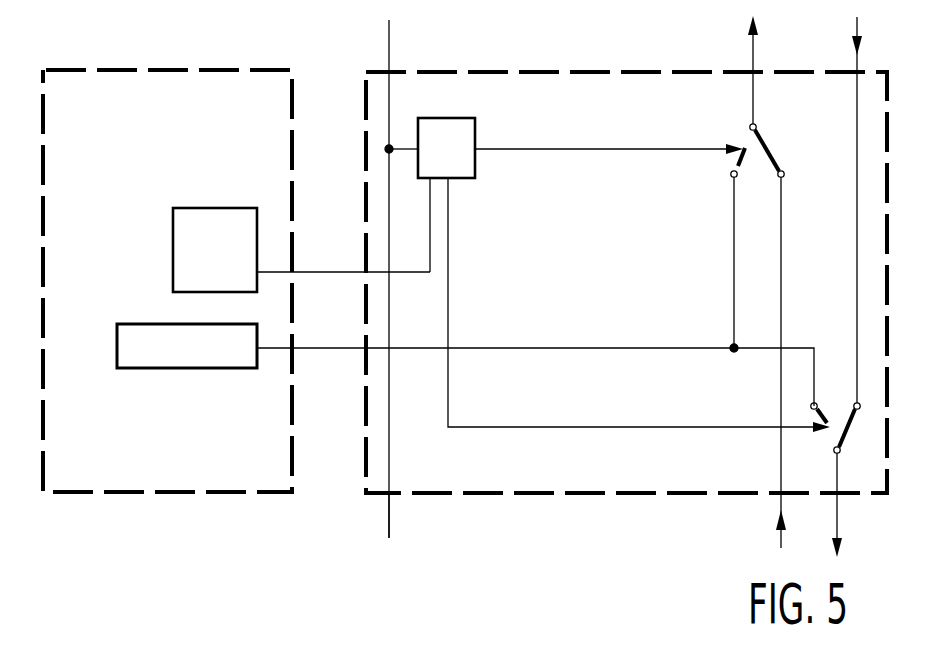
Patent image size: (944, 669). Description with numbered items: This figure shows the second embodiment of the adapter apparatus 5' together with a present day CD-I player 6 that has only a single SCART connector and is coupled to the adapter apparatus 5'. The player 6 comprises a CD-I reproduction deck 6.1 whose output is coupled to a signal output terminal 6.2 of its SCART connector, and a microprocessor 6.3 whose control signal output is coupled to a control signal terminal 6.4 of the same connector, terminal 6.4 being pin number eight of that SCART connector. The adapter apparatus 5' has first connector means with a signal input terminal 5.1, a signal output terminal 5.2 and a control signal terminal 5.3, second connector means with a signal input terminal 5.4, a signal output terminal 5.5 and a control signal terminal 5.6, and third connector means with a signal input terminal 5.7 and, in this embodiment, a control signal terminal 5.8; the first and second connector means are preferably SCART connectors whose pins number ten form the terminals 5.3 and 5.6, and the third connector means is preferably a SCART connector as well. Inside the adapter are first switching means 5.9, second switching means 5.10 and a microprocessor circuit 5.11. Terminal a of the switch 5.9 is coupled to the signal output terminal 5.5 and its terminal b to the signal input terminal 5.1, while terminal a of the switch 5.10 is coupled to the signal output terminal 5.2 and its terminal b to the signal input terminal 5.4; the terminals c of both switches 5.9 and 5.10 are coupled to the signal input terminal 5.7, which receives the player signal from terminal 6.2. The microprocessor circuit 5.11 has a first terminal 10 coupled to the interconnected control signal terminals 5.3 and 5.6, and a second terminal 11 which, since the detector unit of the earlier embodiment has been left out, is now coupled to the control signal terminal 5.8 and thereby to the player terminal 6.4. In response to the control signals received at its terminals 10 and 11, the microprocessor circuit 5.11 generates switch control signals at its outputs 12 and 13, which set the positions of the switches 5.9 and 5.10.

The CD-I player 6 is at (182, 70).
The CD-I reproduction deck 6.1 is at (178, 361).
The signal output terminal 6.2 is at (294, 348).
The microprocessor 6.3 is at (203, 211).
The control signal terminal 6.4 is at (293, 272).
The adapter apparatus 5' is at (626, 259).
The signal input terminal 5.1 is at (855, 70).
The signal output terminal 5.2 is at (756, 70).
The control signal terminal 5.3 is at (392, 70).
The signal input terminal 5.4 is at (778, 504).
The signal output terminal 5.5 is at (835, 497).
The control signal terminal 5.6 is at (393, 497).
The signal input terminal 5.7 is at (366, 352).
The control signal terminal 5.8 is at (367, 276).
The first switching means 5.9 is at (836, 418).
The second switching means 5.10 is at (755, 153).
The microprocessor circuit 5.11 is at (462, 130).
The first terminal 10 is at (418, 144).
The second terminal 11 is at (427, 180).
The switch control signal output 12 is at (452, 180).
The switch control signal output 13 is at (478, 152).